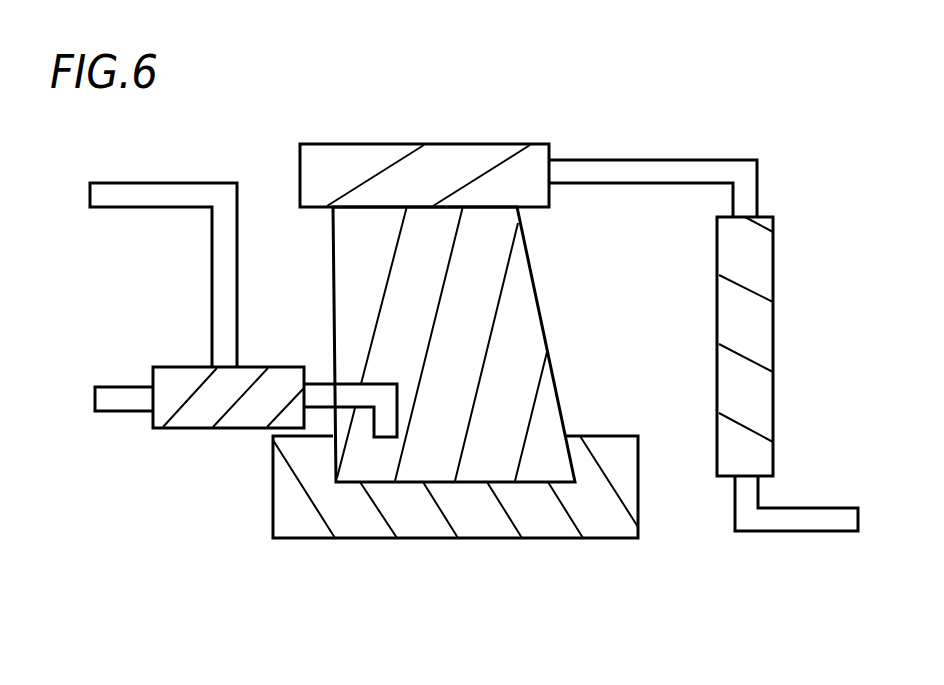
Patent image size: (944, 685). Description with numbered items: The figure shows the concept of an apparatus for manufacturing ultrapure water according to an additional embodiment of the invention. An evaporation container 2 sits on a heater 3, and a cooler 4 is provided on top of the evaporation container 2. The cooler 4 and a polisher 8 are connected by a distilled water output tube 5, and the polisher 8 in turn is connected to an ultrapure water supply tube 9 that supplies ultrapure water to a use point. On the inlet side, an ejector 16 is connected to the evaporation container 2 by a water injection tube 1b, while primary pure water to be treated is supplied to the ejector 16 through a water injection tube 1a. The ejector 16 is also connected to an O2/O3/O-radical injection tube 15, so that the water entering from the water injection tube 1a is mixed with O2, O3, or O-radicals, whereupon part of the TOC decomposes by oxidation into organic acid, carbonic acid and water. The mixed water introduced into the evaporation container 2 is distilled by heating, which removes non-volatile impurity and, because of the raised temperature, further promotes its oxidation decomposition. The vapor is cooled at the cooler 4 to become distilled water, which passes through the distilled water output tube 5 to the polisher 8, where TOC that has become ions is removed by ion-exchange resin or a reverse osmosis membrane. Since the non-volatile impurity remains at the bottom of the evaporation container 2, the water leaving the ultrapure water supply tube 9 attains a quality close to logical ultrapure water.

The water injection tube 1a is at (120, 412).
The water injection tube 1b is at (321, 383).
The evaporation container 2 is at (532, 277).
The heater 3 is at (432, 542).
The cooler 4 is at (483, 140).
The distilled water output tube 5 is at (673, 158).
The polisher 8 is at (775, 323).
The ultrapure water supply tube 9 is at (820, 505).
The O2/O3/O-radical injection tube 15 is at (148, 208).
The ejector 16 is at (195, 430).